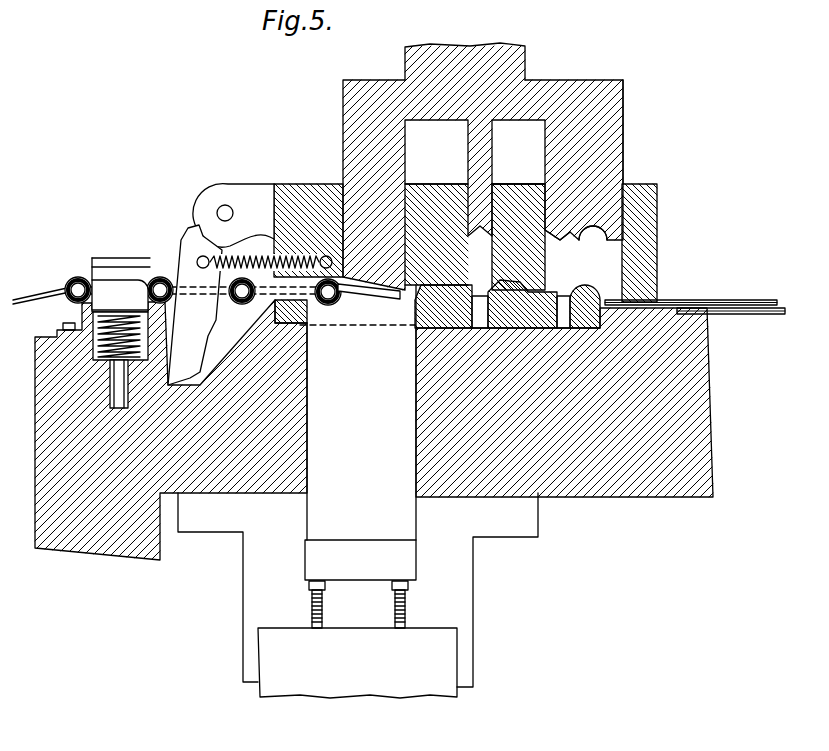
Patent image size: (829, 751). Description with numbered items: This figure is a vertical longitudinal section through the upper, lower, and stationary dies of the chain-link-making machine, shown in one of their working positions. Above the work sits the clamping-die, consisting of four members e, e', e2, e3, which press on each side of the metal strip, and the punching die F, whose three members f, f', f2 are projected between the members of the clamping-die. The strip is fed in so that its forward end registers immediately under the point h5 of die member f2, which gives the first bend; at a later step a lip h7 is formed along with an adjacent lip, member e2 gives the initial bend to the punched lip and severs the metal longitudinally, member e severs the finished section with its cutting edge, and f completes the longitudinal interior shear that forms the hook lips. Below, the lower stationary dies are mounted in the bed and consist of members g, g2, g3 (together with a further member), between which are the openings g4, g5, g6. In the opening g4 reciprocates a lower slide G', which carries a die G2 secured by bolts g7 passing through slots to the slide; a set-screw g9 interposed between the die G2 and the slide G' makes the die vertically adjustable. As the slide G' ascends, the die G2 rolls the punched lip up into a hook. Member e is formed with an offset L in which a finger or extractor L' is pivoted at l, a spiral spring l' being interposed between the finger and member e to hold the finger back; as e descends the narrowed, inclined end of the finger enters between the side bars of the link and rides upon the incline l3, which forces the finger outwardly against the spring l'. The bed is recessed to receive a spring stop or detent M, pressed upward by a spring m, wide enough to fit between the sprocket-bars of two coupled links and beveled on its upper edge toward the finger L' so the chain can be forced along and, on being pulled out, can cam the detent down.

The die F is at (513, 53).
The member of die F f is at (469, 168).
The member of die F f' is at (518, 152).
The member of die F f2 is at (623, 141).
The member of clamping-die E e is at (308, 218).
The member of clamping-die E e' is at (436, 202).
The member of clamping-die E e2 is at (508, 186).
The member of clamping-die E e3 is at (640, 185).
The point of die f2 h5 is at (592, 221).
The lip h7 is at (547, 239).
The offset L is at (233, 198).
The finger or extractor L' is at (191, 287).
The pivot l is at (232, 213).
The spiral spring l' is at (264, 252).
The incline l3 is at (374, 430).
The spring stop or detent M is at (100, 294).
The spring m is at (96, 330).
The member of lower stationary dies g is at (291, 311).
The member of lower stationary dies g2 is at (443, 306).
The member of lower stationary dies g3 is at (480, 312).
The opening g4 is at (396, 298).
The opening g5 is at (585, 306).
The opening g6 is at (563, 312).
The bolts g7 is at (522, 304).
The set-screw g9 is at (311, 603).
The lower slide G' is at (357, 663).
The die G2 is at (360, 432).